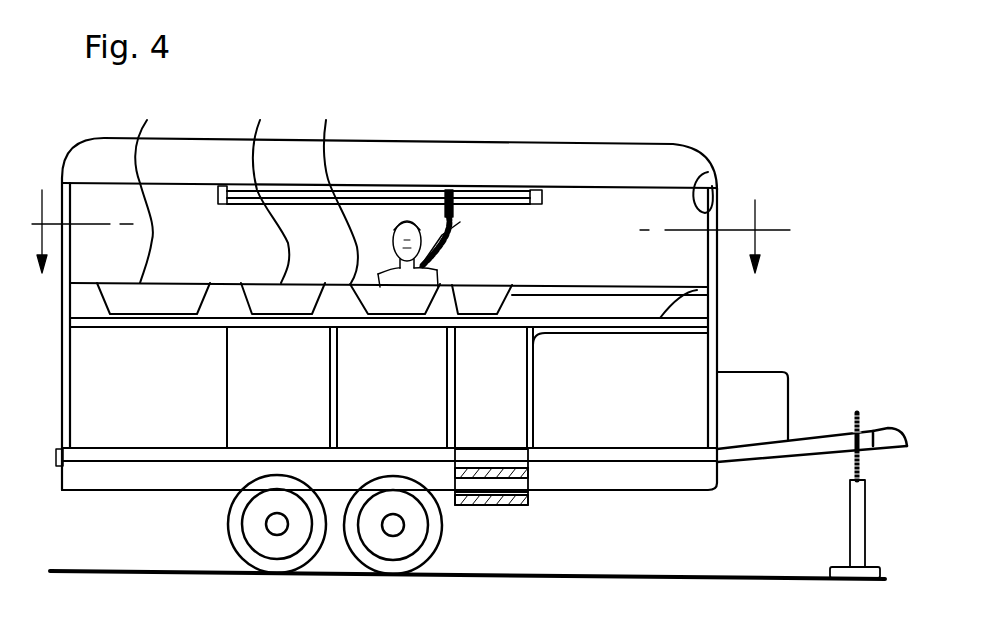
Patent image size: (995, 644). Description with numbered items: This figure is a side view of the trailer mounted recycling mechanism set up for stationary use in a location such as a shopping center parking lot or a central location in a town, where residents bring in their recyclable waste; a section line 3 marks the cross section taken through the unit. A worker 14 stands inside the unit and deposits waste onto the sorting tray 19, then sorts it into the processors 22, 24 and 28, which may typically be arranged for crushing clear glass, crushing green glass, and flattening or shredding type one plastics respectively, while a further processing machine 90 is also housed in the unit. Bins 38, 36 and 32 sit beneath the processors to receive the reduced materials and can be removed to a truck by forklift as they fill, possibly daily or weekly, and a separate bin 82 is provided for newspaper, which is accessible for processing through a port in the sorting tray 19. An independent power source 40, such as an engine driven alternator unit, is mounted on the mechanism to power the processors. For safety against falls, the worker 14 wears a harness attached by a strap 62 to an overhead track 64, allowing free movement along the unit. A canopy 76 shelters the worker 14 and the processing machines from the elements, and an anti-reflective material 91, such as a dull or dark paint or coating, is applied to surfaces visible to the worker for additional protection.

The section line 3- 3 is at (411, 217).
The worker 14 is at (383, 268).
The sorting tray 19 is at (680, 318).
The processor 22 is at (335, 188).
The processor 24 is at (268, 188).
The processor 28 is at (146, 188).
The bin 32 is at (412, 388).
The bin 36 is at (306, 388).
The bin 38 is at (166, 388).
The independent power source 40 is at (788, 392).
The strap 62 is at (464, 222).
The overhead track 64 is at (548, 192).
The canopy 76 is at (673, 143).
The bin 82 is at (639, 388).
The processing machine 90 is at (473, 277).
The anti-reflective material 91 is at (597, 216).